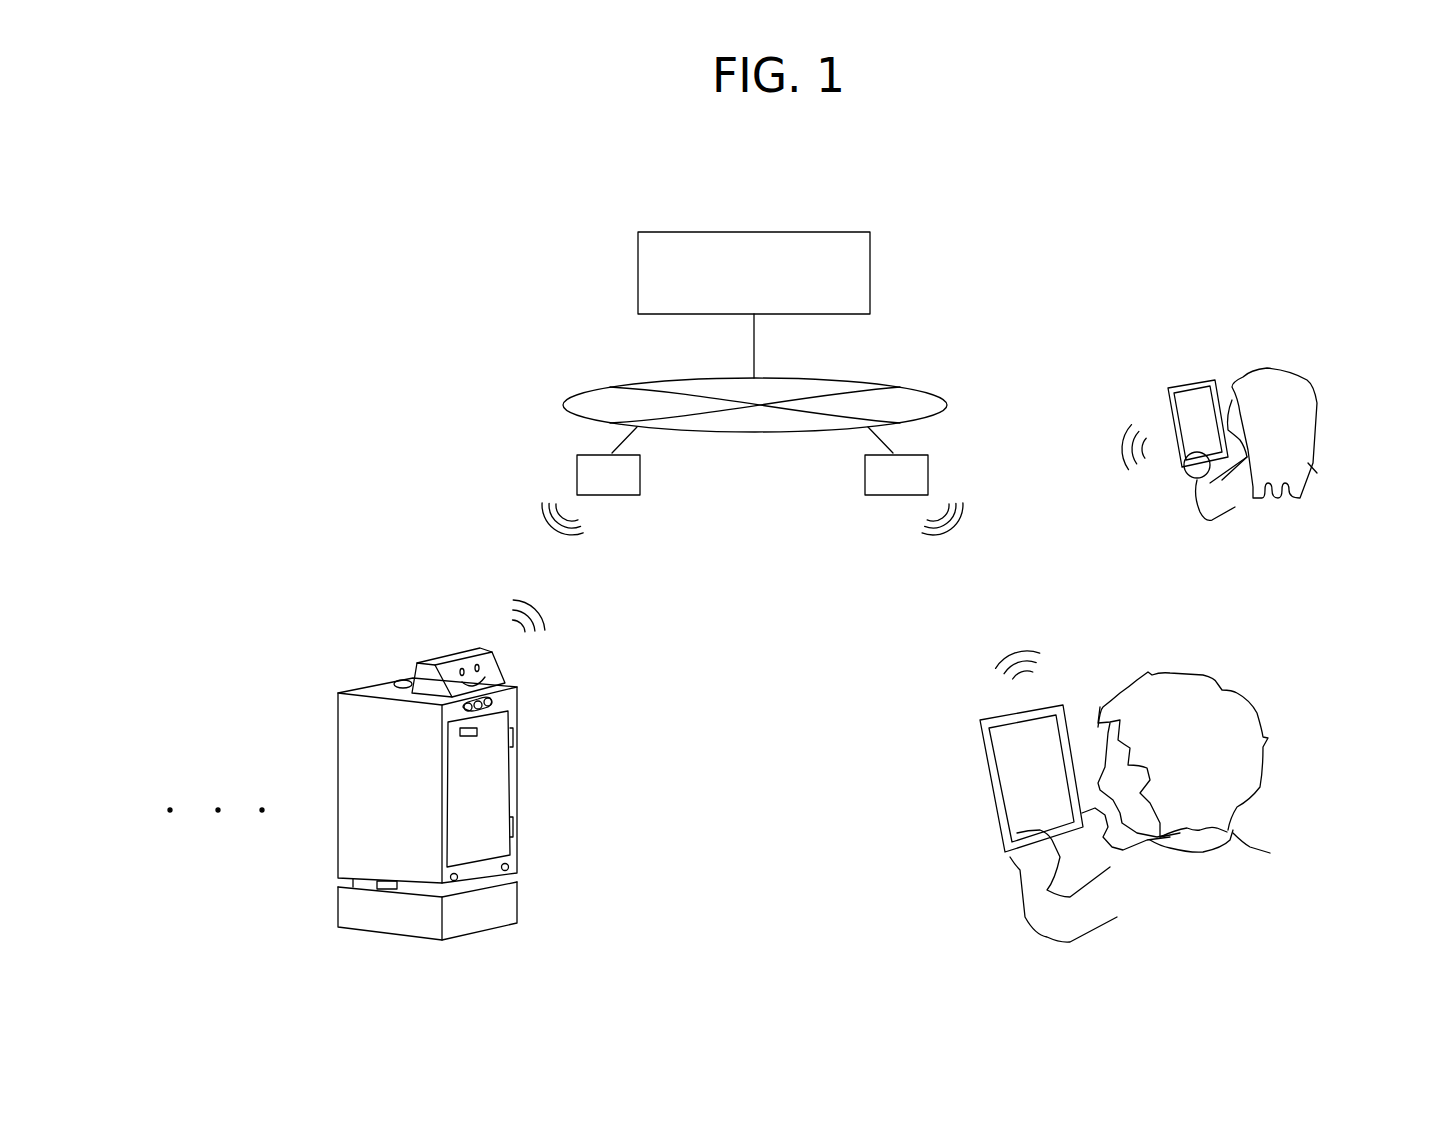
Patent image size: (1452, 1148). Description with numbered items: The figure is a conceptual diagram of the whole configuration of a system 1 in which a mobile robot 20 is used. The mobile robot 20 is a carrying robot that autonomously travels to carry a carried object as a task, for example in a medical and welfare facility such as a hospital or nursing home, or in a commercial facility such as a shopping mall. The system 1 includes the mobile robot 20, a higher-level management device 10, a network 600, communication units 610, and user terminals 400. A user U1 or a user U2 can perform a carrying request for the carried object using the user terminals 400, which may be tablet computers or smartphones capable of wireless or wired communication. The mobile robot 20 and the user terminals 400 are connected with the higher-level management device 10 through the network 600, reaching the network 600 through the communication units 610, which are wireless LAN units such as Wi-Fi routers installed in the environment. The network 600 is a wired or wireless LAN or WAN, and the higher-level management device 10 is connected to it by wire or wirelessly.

The system 1 is at (475, 232).
The higher-level management device 10 is at (825, 232).
The mobile robot 20 is at (342, 655).
The user terminal 400 is at (1197, 387).
The network 600 is at (945, 405).
The communication unit 610 is at (577, 466).
The user U1 is at (1313, 390).
The user U2 is at (1263, 712).